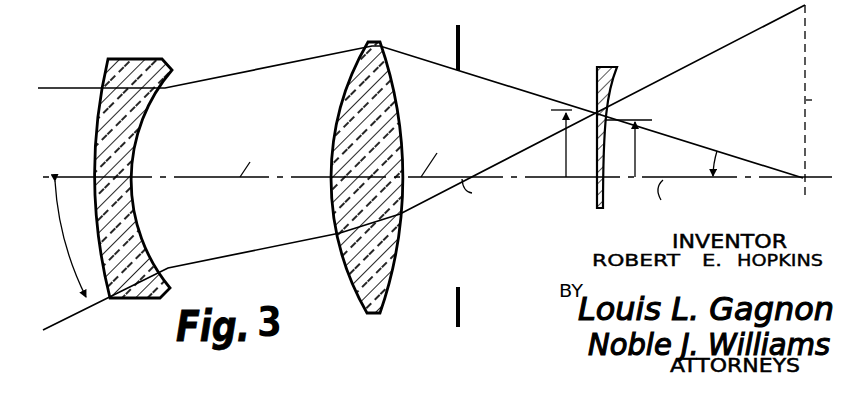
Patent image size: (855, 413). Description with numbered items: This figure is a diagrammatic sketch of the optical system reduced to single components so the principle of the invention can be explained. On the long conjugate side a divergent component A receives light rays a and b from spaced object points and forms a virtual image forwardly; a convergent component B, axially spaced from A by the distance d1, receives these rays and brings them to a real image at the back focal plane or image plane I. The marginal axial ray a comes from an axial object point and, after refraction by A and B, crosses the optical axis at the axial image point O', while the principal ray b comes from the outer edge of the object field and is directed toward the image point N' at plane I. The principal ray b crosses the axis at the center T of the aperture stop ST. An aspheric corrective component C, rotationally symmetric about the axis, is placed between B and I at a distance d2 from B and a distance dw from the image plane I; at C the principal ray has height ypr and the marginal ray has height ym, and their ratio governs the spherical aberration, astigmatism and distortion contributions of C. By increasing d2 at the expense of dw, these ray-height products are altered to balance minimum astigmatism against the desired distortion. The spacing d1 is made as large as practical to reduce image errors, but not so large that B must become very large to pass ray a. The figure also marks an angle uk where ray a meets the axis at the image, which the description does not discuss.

The divergent component A is at (147, 60).
The convergent component B is at (381, 44).
The corrective component C is at (613, 72).
The aperture stop ST is at (461, 46).
The marginal axial ray a is at (270, 60).
The principal ray b is at (271, 250).
The spacing between divergent and convergent components d1 is at (256, 160).
The distance between correction component and convergent component d2 is at (443, 159).
The center of the stop T is at (473, 191).
The height of principal ray at correction component ypr is at (552, 143).
The height of marginal ray at correction component ym is at (632, 148).
The final marginal ray slope angle uk is at (716, 152).
The distance between correction component and image plane dw is at (671, 194).
The image point N' N is at (806, 6).
The image plane I is at (815, 106).
The axial image point O' O is at (800, 183).